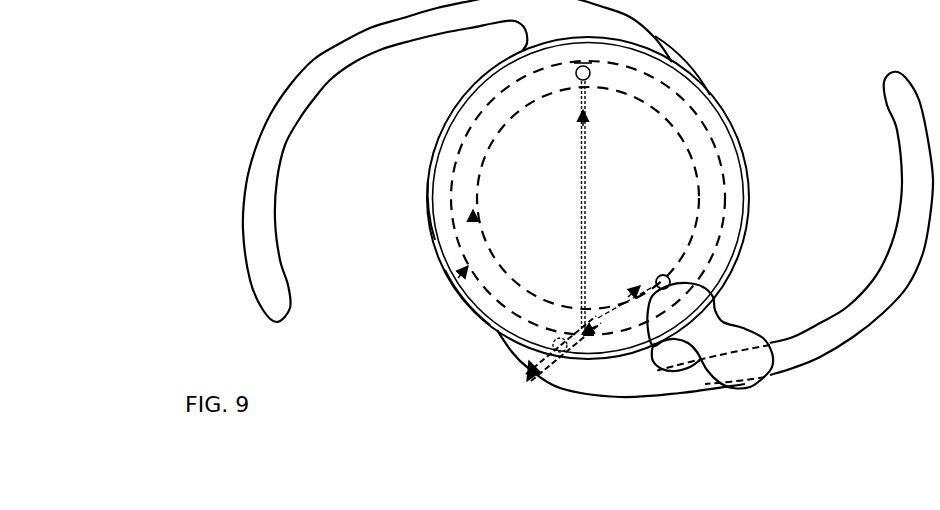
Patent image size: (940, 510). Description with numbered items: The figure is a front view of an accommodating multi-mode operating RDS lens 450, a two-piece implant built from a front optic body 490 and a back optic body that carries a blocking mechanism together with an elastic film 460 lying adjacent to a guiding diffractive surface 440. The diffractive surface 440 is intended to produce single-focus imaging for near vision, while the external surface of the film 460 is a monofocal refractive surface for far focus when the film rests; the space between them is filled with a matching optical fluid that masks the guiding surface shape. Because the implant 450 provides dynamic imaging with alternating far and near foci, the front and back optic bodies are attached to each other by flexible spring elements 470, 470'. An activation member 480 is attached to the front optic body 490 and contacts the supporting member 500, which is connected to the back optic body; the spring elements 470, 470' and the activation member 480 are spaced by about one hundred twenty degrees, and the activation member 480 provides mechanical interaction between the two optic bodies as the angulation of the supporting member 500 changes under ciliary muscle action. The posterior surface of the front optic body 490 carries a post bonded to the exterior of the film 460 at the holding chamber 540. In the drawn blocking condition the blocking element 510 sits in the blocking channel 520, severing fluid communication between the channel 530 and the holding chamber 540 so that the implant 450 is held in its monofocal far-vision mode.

The guiding diffractive surface 440 is at (445, 222).
The accommodating multi-mode operating RDS lens 450 is at (260, 60).
The elastic film 460 is at (450, 286).
The spring element 470 is at (702, 57).
The spring element 470' is at (402, 185).
The activation member 480 is at (715, 324).
The front optic body 490 is at (718, 268).
The supporting member 500 is at (808, 367).
The blocking element 510 is at (594, 338).
The blocking channel 520 is at (529, 356).
The channel 530 is at (594, 114).
The holding chamber 540 is at (642, 285).